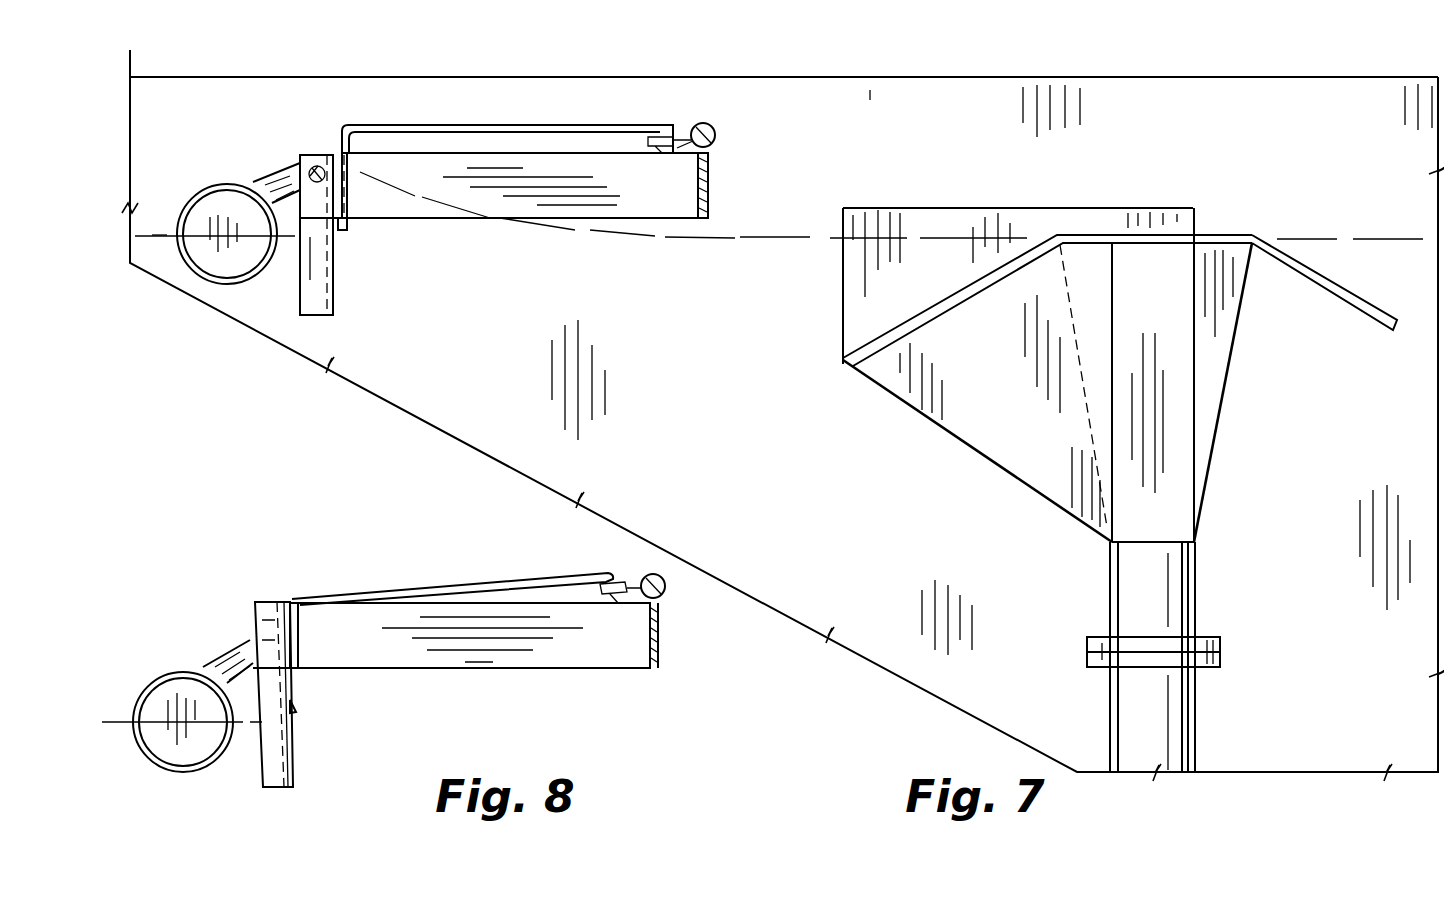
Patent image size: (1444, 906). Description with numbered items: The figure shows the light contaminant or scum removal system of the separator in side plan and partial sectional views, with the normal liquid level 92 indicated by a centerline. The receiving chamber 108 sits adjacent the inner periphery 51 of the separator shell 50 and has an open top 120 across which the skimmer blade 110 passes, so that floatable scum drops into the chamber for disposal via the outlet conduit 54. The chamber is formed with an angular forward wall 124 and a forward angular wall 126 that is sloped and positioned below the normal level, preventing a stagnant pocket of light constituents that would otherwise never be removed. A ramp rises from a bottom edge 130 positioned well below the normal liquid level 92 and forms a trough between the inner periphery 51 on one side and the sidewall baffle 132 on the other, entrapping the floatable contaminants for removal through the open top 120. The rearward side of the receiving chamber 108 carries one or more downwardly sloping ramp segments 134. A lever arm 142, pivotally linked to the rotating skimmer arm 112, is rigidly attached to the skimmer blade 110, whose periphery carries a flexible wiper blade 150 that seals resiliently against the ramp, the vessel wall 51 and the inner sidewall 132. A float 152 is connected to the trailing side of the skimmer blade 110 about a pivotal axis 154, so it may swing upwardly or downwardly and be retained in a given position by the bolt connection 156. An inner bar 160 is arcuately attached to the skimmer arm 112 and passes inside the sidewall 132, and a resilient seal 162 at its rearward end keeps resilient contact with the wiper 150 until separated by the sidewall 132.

In FIG. 7, the separator shell 50 is at (963, 77).
In FIG. 7, the inner periphery 51 is at (848, 163).
In FIG. 7, the outlet conduit 54 is at (1177, 585).
In FIG. 7, the normal liquid level 92 is at (777, 233).
In FIG. 8, the normal liquid level 92 is at (118, 725).
In FIG. 7, the receiving chamber 108 is at (1020, 398).
In FIG. 7, the skimmer blade 110 is at (345, 228).
In FIG. 8, the skimmer blade 110 is at (290, 707).
In FIG. 7, the rotating skimmer arm 112 is at (713, 128).
In FIG. 7, the open top 120 is at (1220, 233).
In FIG. 7, the angular forward wall 124 is at (1230, 357).
In FIG. 7, the forward angular wall 126 is at (947, 433).
In FIG. 7, the bottom edge 130 is at (840, 358).
In FIG. 7, the sidewall baffle 132 is at (907, 280).
In FIG. 7, the downwardly sloping ramp segment 134 is at (1343, 287).
In FIG. 7, the lever arm 142 is at (518, 130).
In FIG. 8, the lever arm 142 is at (480, 585).
In FIG. 7, the flexible wiper blade 150 is at (333, 303).
In FIG. 8, the flexible wiper blade 150 is at (273, 790).
In FIG. 7, the float 152 is at (210, 278).
In FIG. 8, the float 152 is at (188, 763).
In FIG. 7, the pivotal axis 154 is at (313, 153).
In FIG. 7, the bolt connection 156 is at (257, 173).
In FIG. 8, the bolt connection 156 is at (228, 661).
In FIG. 7, the inner bar 160 is at (460, 183).
In FIG. 8, the inner bar 160 is at (380, 643).
In FIG. 7, the resilient seal 162 is at (322, 155).
In FIG. 8, the resilient seal 162 is at (272, 610).